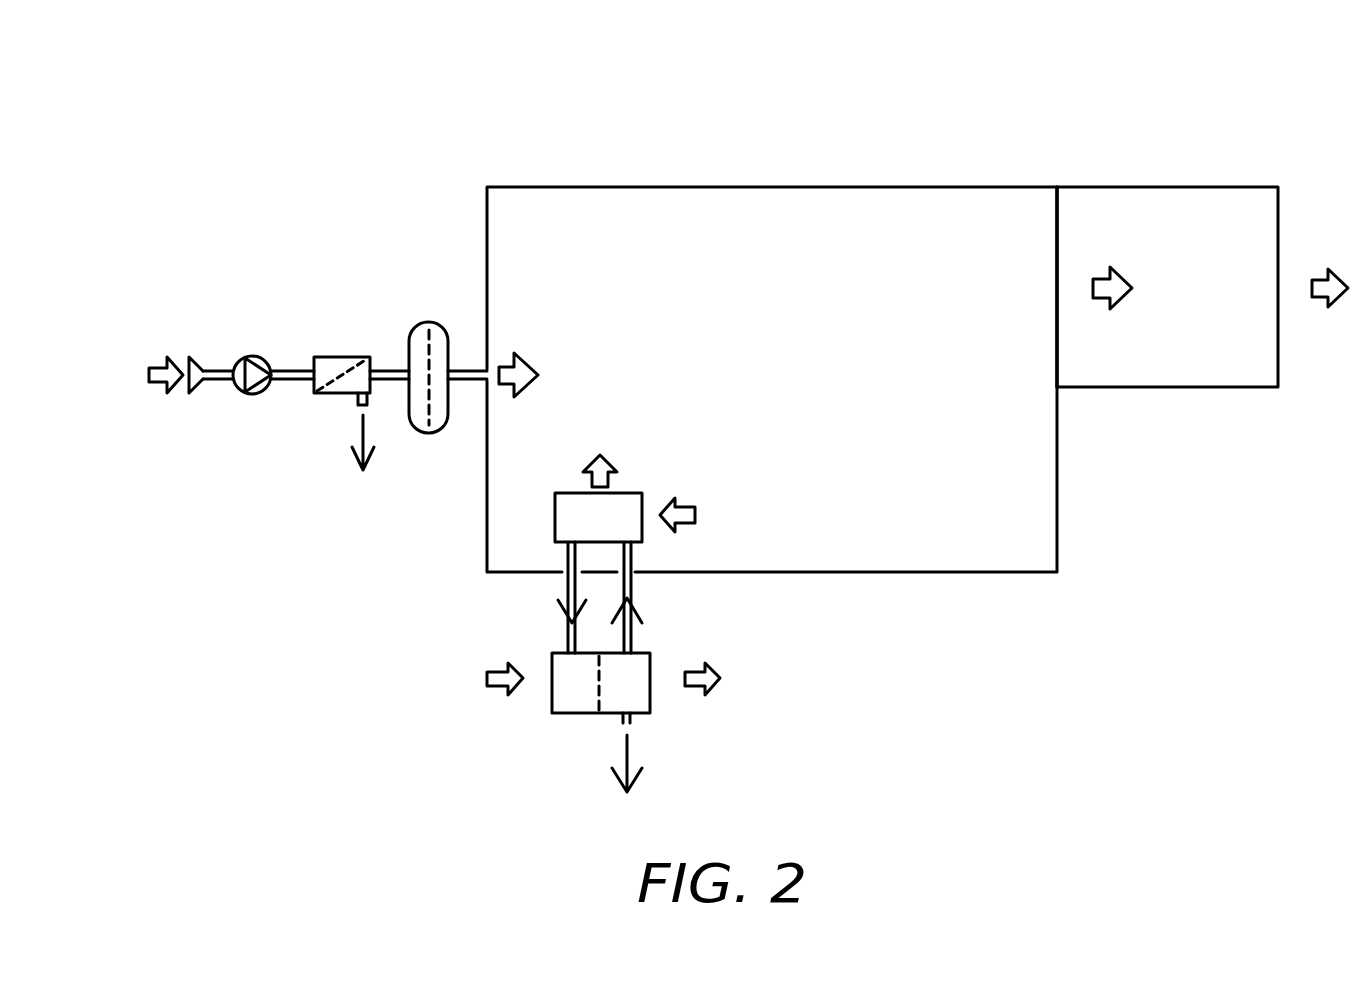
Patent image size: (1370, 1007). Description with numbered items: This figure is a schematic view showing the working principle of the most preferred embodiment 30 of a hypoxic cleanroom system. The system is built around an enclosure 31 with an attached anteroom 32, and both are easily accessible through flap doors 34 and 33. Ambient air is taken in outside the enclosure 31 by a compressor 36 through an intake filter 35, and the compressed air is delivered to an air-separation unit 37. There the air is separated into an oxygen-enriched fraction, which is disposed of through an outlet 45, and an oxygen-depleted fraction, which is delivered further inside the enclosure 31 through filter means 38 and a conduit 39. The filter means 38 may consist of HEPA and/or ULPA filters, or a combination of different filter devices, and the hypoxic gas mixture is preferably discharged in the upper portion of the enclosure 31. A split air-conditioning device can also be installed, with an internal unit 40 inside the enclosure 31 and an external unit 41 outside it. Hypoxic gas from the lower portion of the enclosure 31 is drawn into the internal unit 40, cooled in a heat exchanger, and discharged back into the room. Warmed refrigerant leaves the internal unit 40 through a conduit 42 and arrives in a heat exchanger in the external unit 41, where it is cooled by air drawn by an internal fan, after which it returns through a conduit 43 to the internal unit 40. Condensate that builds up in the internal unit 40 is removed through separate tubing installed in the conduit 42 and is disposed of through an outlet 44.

The most preferred embodiment 30 is at (305, 82).
The enclosure 31 is at (755, 205).
The anteroom 32 is at (1150, 205).
The flap door 33 is at (1059, 200).
The flap door 34 is at (1280, 238).
The intake filter 35 is at (195, 360).
The compressor 36 is at (238, 388).
The air-separation unit 37 is at (338, 357).
The filter means 38 is at (427, 432).
The conduit 39 is at (468, 373).
The internal unit 40 is at (628, 505).
The external unit 41 is at (562, 697).
The conduit 42 is at (567, 585).
The conduit 43 is at (632, 585).
The outlet 44 is at (632, 723).
The outlet 45 is at (357, 402).